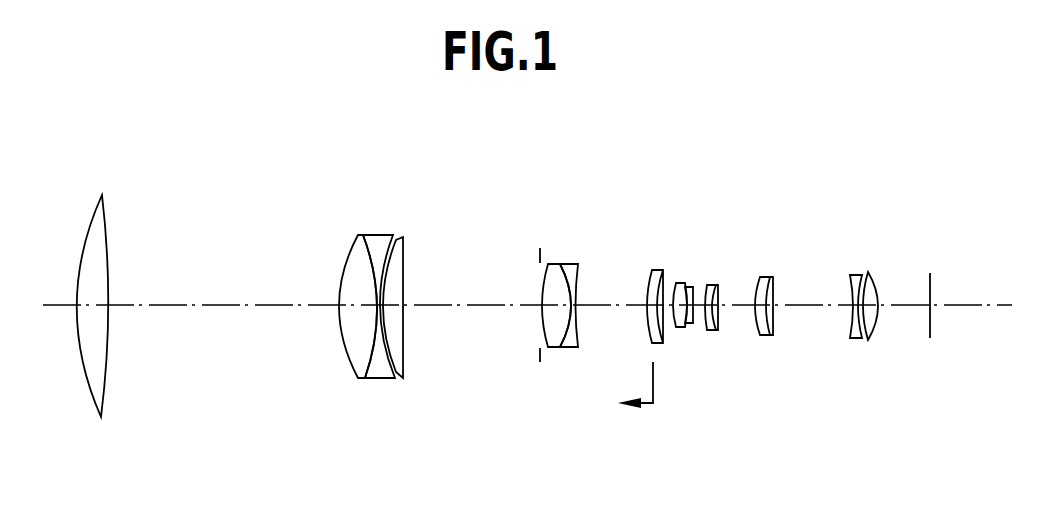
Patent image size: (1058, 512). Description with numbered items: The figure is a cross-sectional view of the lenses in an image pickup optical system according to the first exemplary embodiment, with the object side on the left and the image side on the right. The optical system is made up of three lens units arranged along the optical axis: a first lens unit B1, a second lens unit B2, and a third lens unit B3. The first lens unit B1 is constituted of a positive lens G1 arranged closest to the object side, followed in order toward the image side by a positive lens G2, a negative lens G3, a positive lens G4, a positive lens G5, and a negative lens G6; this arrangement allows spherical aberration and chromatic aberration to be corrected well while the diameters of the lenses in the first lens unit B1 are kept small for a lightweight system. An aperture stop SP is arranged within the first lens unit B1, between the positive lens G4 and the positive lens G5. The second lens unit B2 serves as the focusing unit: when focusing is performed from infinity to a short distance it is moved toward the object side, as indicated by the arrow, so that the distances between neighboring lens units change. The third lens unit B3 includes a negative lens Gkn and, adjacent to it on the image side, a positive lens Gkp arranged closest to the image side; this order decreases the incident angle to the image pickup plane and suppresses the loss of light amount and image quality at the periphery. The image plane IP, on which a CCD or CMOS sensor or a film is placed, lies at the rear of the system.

The positive lens G1 is at (102, 225).
The positive lens G2 is at (353, 262).
The negative lens G3 is at (380, 242).
The positive lens G4 is at (402, 257).
The aperture stop SP is at (541, 262).
The positive lens G5 is at (550, 289).
The negative lens G6 is at (573, 270).
The negative lens Gkn is at (857, 275).
The positive lens Gkp is at (877, 283).
The image plane IP is at (937, 287).
The first lens unit B1 is at (592, 440).
The second lens unit B2 is at (667, 440).
The third lens unit B3 is at (872, 440).